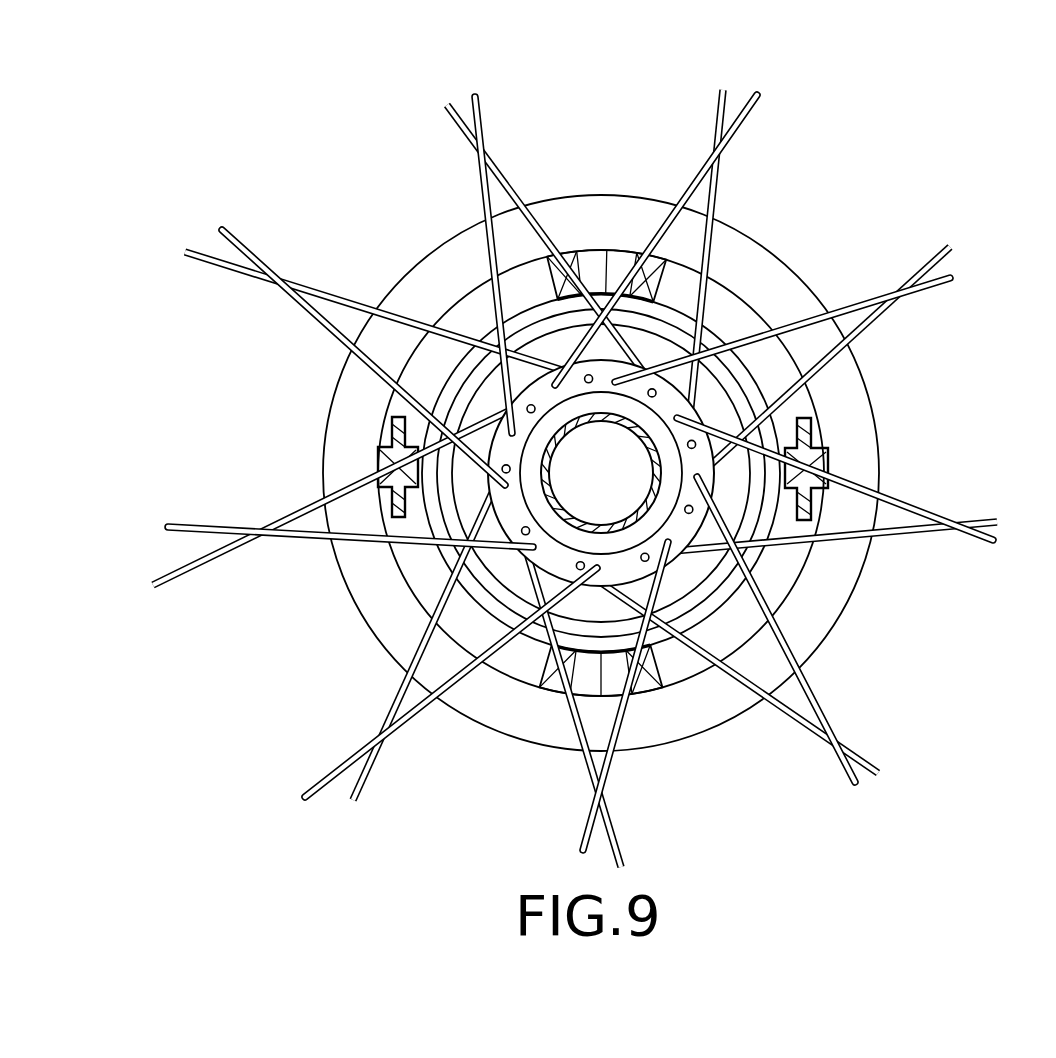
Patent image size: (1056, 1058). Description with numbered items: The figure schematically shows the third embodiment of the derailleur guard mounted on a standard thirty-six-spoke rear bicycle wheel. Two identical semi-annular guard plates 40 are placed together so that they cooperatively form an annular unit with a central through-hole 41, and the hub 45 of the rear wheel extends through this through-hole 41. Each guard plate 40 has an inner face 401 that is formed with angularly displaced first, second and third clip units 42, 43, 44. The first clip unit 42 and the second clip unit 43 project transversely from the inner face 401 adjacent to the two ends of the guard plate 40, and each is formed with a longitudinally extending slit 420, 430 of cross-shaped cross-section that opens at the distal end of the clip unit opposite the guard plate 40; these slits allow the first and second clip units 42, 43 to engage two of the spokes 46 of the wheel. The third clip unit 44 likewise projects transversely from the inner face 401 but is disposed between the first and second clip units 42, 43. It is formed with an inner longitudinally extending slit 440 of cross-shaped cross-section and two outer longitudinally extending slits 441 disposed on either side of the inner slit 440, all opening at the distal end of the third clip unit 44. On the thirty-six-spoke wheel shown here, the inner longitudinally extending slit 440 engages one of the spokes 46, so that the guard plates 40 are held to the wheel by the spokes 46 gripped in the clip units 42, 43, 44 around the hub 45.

The semi-annular guard plate 40 is at (862, 605).
The inner face 401 is at (350, 432).
The central through-hole 41 is at (770, 642).
The first clip unit 42 is at (684, 225).
The longitudinally extending slit 420 is at (712, 282).
The second clip unit 43 is at (613, 723).
The longitudinally extending slit 430 is at (647, 700).
The third clip unit 44 is at (611, 521).
The inner longitudinally extending slit 440 is at (828, 460).
The outer longitudinally extending slit 441 is at (828, 432).
The hub 45 is at (466, 338).
The spoke 46 is at (423, 703).